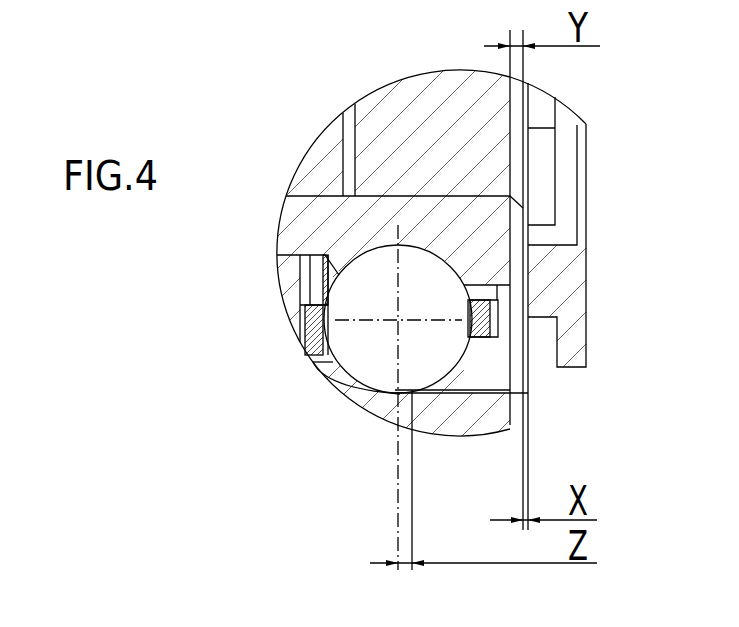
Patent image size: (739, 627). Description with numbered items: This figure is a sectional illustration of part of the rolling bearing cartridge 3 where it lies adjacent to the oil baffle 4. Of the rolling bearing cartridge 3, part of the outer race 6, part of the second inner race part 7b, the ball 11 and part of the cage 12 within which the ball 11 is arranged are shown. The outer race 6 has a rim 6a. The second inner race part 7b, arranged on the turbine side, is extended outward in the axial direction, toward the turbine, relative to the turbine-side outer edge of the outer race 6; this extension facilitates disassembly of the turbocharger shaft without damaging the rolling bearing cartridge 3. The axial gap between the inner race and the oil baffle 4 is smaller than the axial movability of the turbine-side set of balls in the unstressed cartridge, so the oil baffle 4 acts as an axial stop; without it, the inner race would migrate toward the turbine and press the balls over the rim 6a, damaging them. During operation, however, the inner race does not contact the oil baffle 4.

The rolling bearing cartridge 3 is at (330, 81).
The second inner race part 7b is at (296, 231).
The cage 12 is at (318, 338).
The outer race 6 is at (340, 377).
The rim 6a is at (528, 393).
The ball 11 is at (381, 360).
The oil baffle 4 is at (570, 345).